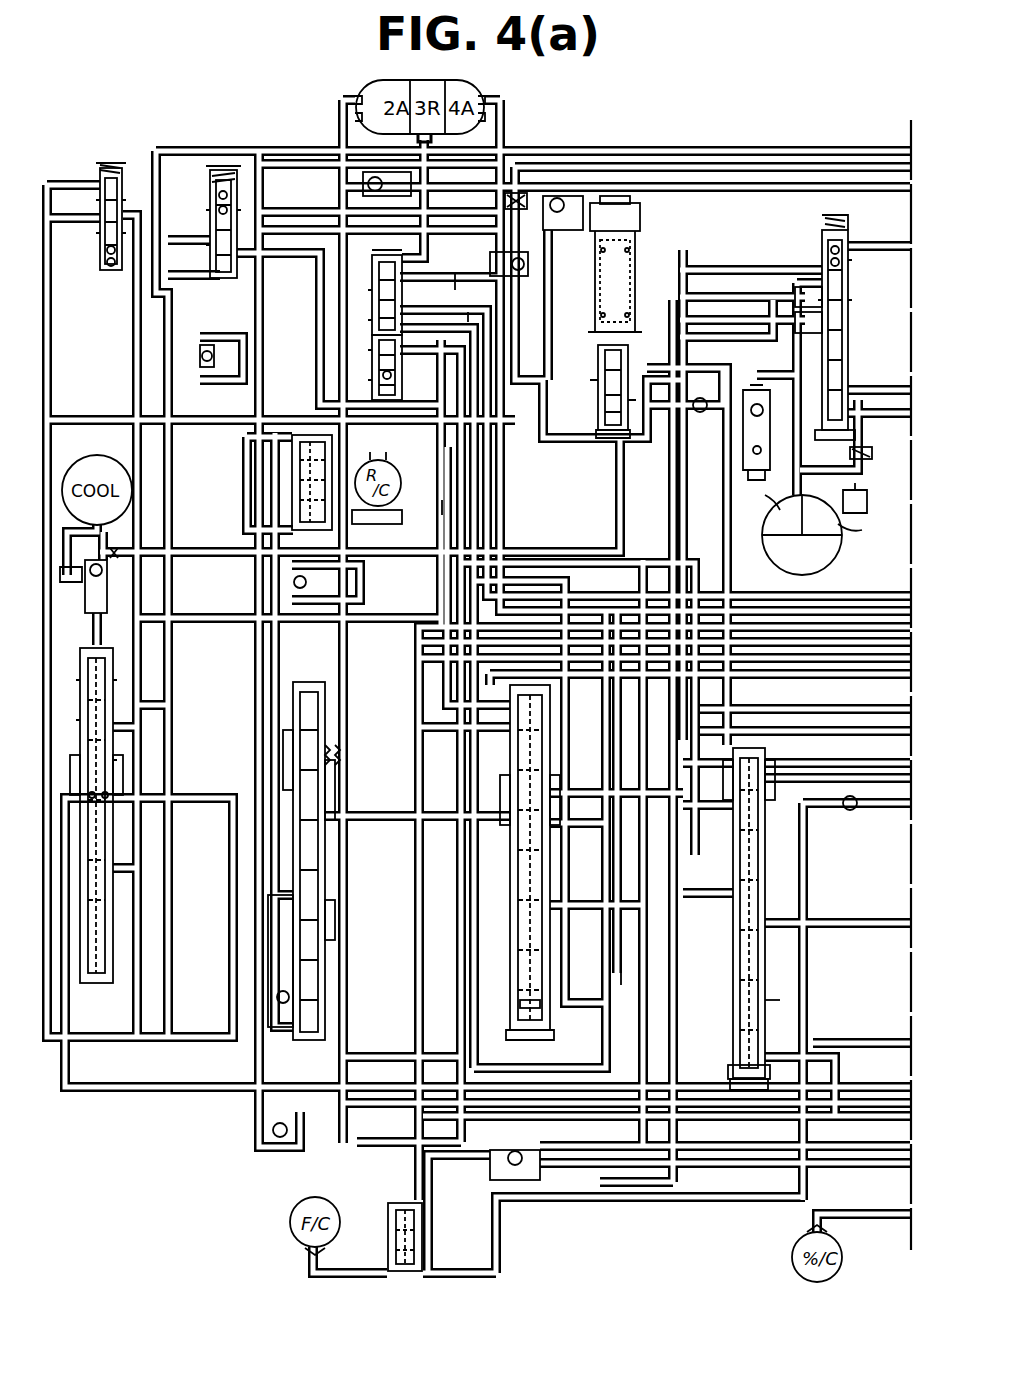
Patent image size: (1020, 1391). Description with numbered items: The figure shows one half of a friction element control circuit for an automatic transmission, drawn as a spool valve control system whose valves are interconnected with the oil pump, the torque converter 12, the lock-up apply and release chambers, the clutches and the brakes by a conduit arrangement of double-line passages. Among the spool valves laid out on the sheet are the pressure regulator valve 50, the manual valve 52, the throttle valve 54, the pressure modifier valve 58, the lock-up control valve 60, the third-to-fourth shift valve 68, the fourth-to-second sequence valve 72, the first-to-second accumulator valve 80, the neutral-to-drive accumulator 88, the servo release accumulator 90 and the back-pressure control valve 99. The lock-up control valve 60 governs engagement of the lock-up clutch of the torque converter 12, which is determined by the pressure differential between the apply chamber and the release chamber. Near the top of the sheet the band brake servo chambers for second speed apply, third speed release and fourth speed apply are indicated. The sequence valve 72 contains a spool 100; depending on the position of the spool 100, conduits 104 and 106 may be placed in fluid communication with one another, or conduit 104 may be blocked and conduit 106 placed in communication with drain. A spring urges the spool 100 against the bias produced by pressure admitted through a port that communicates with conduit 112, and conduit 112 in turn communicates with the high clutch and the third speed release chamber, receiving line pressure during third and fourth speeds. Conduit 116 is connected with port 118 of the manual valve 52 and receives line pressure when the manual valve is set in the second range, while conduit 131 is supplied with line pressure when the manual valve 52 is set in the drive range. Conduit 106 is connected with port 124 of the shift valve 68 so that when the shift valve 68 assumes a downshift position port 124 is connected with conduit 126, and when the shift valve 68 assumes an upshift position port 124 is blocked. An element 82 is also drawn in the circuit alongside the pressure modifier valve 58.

The torque converter 12 is at (838, 550).
The pressure regulator valve 50 is at (507, 851).
The manual valve 52 is at (296, 706).
The throttle valve 54 is at (80, 666).
The pressure modifier valve 58 is at (105, 275).
The lock-up control valve 60 is at (850, 301).
The 3-4 shift valve 68 is at (771, 884).
The 4-2 sequence valve 72 is at (372, 292).
The 1-2 accumulator valve 80 is at (646, 272).
The valve 82 is at (208, 212).
The N-D accumulator 88 is at (388, 1241).
The servo release accumulator 90 is at (307, 437).
The back-pressure control valve 99 is at (597, 399).
The spool 100 is at (372, 344).
The conduit 104 is at (476, 346).
The conduit 106 is at (466, 320).
The conduit 112 is at (418, 248).
The conduit 116 is at (438, 448).
The port 118 is at (342, 754).
The port 124 is at (771, 1006).
The conduit 126 is at (458, 279).
The conduit 131 is at (446, 509).